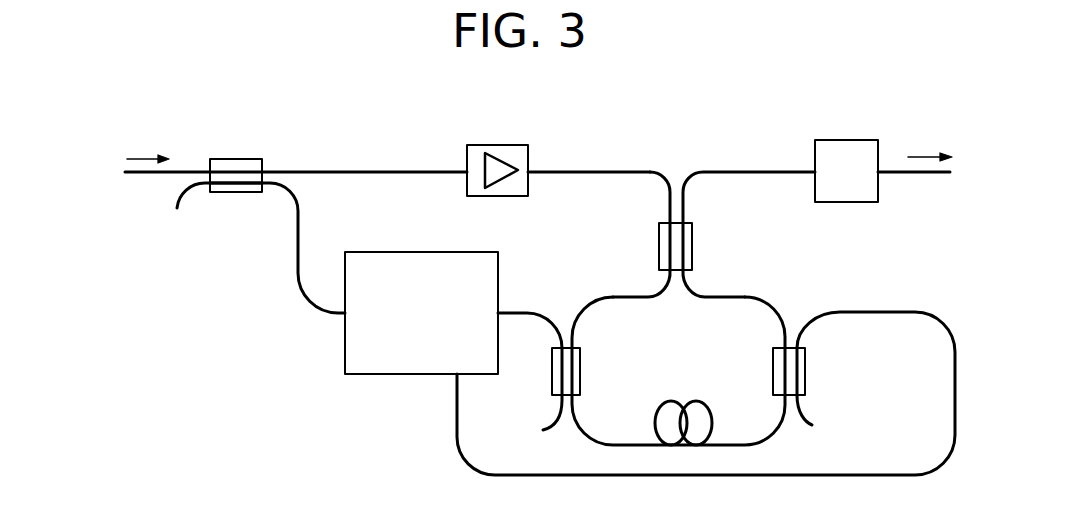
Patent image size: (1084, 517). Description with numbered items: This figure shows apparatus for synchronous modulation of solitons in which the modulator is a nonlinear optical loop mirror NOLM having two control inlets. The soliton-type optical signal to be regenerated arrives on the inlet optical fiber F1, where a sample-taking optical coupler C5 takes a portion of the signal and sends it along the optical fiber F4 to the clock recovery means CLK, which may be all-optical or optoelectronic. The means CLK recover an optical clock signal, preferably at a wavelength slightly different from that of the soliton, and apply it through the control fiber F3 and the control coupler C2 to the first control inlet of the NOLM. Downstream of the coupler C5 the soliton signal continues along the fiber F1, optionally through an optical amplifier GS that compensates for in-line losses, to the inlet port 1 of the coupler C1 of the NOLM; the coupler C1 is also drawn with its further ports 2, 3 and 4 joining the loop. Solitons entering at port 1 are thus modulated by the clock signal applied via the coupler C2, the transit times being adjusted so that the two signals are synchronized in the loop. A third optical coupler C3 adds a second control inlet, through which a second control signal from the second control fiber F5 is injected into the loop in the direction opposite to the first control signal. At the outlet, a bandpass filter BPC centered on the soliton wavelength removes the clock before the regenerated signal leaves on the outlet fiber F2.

The inlet optical fiber F1 is at (163, 173).
The sample-taking optical coupler C5 is at (242, 158).
The optical amplifier GS is at (502, 152).
The inlet port 1 is at (657, 197).
The second port of coupler C1 2 is at (749, 197).
The third port of coupler C1 3 is at (641, 282).
The fourth port of coupler C1 4 is at (714, 282).
The coupler C1 is at (692, 250).
The nonlinear optical loop mirror NOLM is at (777, 427).
The control coupler C2 is at (552, 365).
The third optical coupler C3 is at (805, 372).
The control fiber F3 is at (528, 312).
The optical fiber F4 is at (293, 270).
The clock recovery means CLK is at (407, 362).
The second control fiber F5 is at (883, 310).
The bandpass filter BPC is at (847, 152).
The output optical fiber F2 is at (928, 172).